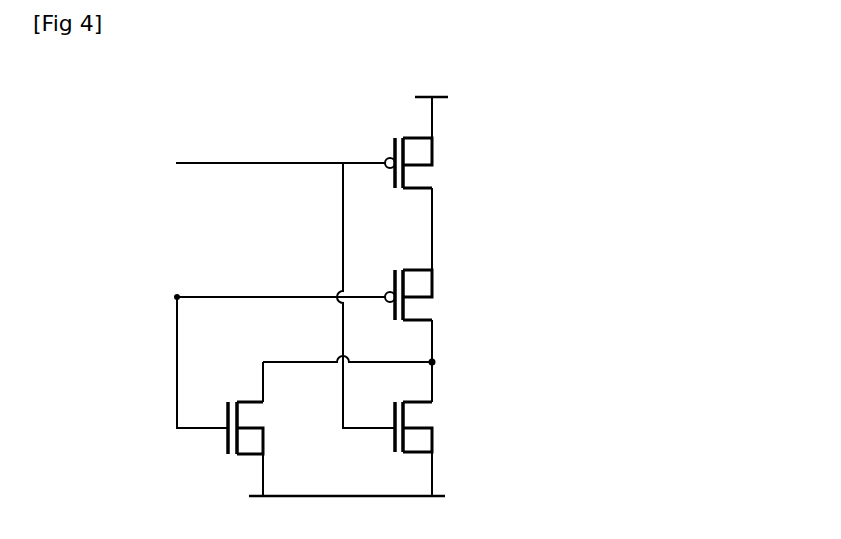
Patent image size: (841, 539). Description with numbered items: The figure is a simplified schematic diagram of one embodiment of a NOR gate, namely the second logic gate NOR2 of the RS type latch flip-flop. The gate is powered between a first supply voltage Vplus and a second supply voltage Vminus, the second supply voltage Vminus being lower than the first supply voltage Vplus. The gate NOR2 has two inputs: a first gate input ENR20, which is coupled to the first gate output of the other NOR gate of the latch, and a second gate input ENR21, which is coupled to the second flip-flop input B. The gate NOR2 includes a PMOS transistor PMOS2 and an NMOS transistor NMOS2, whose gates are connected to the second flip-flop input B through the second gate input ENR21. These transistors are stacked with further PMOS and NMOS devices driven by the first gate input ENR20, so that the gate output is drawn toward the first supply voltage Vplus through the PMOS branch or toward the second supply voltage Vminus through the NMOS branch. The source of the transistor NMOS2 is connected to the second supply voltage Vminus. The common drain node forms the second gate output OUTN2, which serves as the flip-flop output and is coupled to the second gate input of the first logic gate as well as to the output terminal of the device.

The second logic gate NOR2 is at (586, 88).
The first supply voltage Vplus is at (431, 103).
The second supply voltage Vminus is at (359, 508).
The second gate input ENR21 is at (286, 163).
The first gate input ENR20 is at (261, 350).
The second flip-flop input B is at (130, 296).
The PMOS transistor PMOS2 is at (443, 297).
The NMOS transistor NMOS2 is at (224, 458).
The second gate output OUTN2 is at (436, 362).